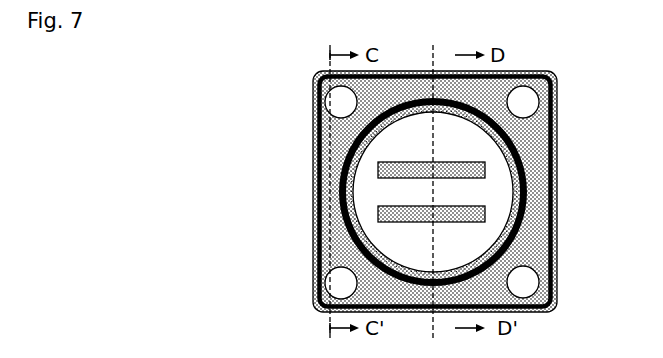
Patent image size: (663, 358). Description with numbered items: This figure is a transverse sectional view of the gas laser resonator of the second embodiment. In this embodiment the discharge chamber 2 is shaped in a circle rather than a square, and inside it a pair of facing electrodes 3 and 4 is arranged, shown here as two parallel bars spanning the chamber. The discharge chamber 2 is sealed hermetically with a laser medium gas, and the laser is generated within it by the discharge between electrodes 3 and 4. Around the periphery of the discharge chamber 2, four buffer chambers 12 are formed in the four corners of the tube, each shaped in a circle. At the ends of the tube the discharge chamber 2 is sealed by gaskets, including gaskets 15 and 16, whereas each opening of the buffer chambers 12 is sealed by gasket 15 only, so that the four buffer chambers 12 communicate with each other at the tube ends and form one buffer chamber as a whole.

The discharge chamber 2 is at (488, 150).
The electrode 3 is at (477, 170).
The electrode 4 is at (480, 213).
The buffer chamber 12 is at (332, 99).
The gasket 15 is at (337, 175).
The gasket 16 is at (316, 128).